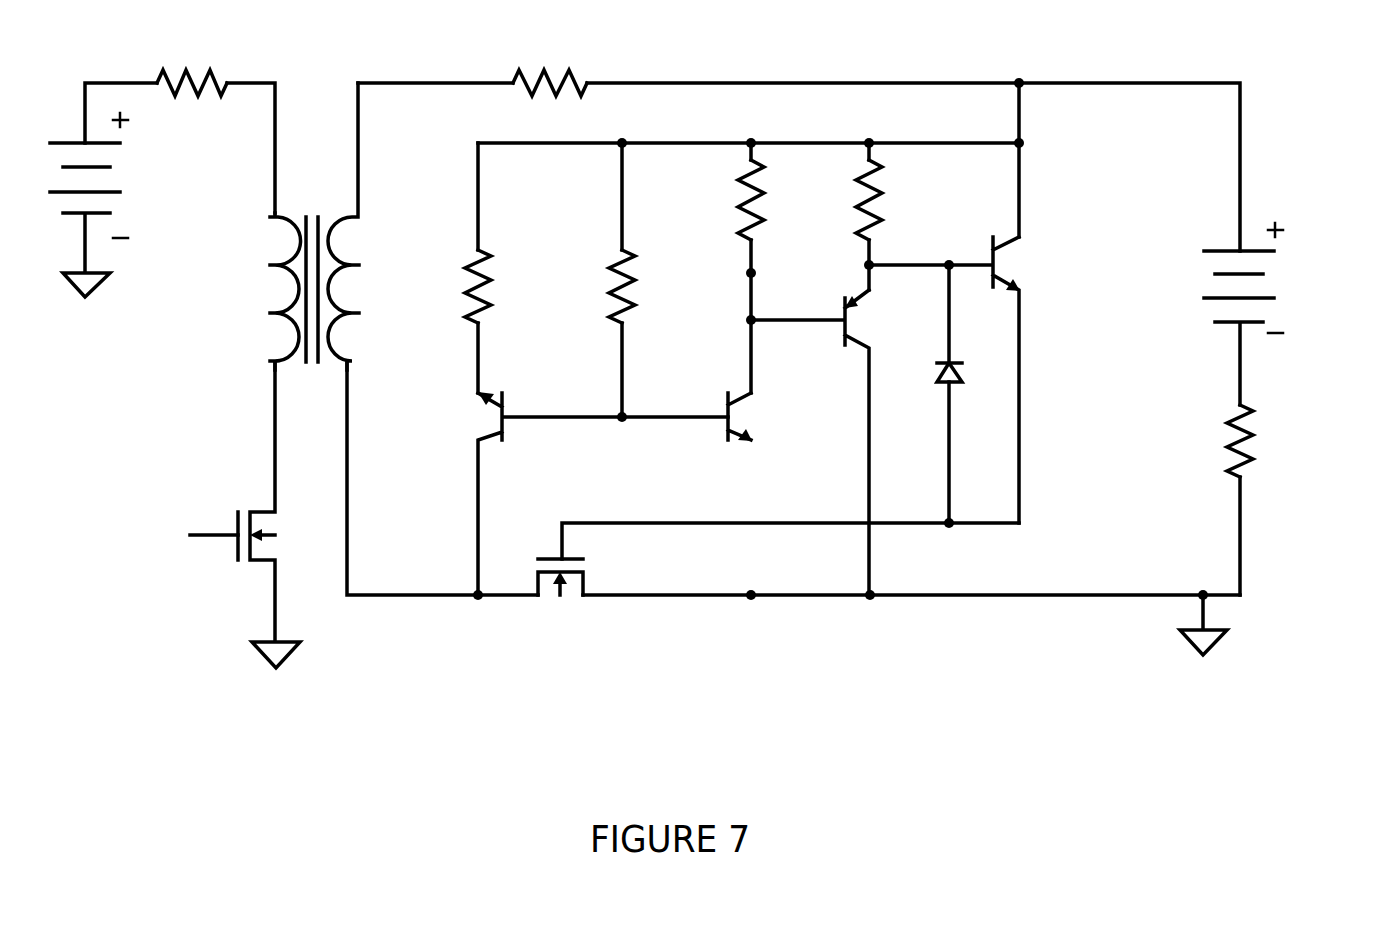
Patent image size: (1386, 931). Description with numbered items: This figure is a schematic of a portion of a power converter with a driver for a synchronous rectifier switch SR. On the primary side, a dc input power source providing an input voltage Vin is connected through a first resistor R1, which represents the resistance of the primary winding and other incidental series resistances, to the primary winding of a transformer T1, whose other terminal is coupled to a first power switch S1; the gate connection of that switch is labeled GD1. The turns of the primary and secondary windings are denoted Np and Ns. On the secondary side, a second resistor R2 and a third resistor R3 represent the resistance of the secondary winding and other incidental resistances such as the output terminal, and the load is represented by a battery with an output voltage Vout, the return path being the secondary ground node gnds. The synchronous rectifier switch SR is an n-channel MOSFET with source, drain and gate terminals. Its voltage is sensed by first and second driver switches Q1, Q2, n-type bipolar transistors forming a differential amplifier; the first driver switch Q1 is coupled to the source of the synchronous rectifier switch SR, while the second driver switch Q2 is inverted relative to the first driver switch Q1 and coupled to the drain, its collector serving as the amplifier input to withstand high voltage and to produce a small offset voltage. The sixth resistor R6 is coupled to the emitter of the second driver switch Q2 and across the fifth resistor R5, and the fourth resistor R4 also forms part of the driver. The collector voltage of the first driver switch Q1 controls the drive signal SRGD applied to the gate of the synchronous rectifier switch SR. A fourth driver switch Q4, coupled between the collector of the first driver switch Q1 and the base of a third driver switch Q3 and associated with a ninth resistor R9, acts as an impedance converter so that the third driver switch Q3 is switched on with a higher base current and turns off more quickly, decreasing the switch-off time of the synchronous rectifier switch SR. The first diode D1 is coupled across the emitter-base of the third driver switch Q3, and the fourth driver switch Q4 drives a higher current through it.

The first resistor R1 is at (192, 67).
The second resistor R2 is at (550, 67).
The third resistor R3 is at (1211, 500).
The fourth resistor R4 is at (780, 268).
The fifth resistor R5 is at (650, 280).
The sixth resistor R6 is at (501, 268).
The ninth resistor R9 is at (899, 216).
The transformer T1 is at (313, 226).
The primary winding turns Np is at (265, 291).
The secondary winding turns Ns is at (362, 226).
The input voltage Vin is at (113, 205).
The output voltage Vout is at (1273, 314).
The first power switch S1 is at (277, 515).
The gate drive of primary switch GD1 is at (201, 562).
The first driver switch Q1 is at (762, 419).
The second driver switch Q2 is at (580, 483).
The third driver switch Q3 is at (973, 371).
The fourth driver switch Q4 is at (836, 437).
The first diode D1 is at (974, 394).
The synchronous rectifier switch SR is at (562, 597).
The drive signal SRGD is at (790, 519).
The secondary ground gnds is at (1242, 633).